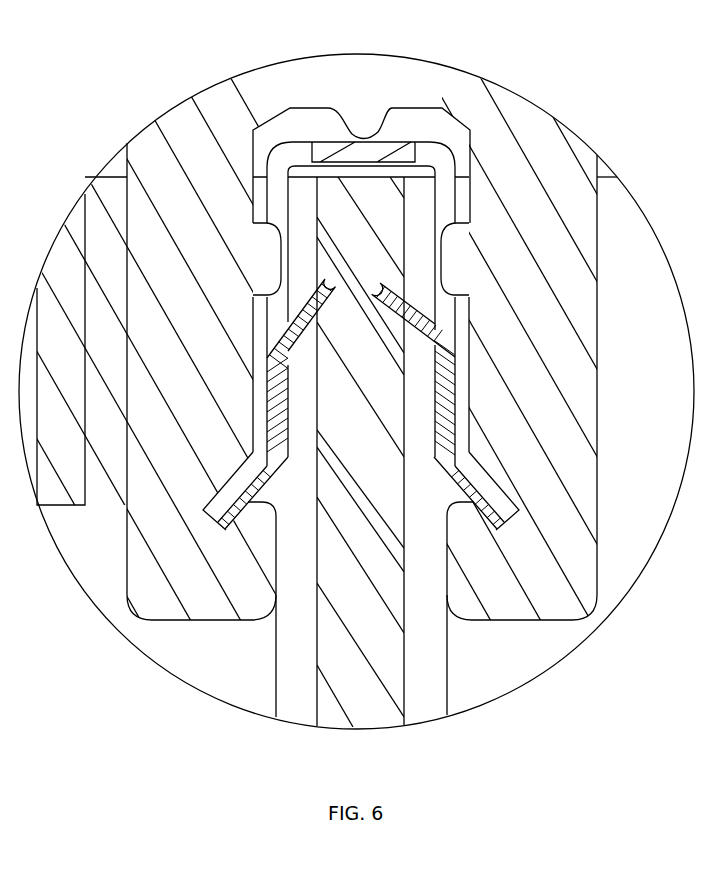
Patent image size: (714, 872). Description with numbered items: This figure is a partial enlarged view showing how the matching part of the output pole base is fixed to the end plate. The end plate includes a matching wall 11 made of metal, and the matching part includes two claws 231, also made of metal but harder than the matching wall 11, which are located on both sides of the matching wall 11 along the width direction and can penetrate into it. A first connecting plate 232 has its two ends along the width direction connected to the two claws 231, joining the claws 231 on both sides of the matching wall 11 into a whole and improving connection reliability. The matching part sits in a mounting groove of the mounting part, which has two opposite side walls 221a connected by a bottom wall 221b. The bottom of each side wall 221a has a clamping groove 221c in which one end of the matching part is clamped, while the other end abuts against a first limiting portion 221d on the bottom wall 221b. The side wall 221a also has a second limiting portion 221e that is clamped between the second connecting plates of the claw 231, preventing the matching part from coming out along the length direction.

The matching wall 11 is at (368, 722).
The side wall 221a is at (148, 596).
The bottom wall 221b is at (417, 100).
The clamping groove 221c is at (207, 516).
The first limiting portion 221d is at (372, 124).
The second limiting portion 221e is at (457, 270).
The claw 231 is at (455, 387).
The first connecting plate 232 is at (281, 103).